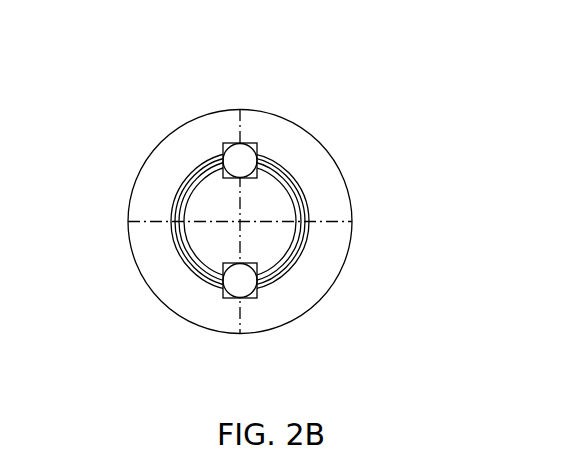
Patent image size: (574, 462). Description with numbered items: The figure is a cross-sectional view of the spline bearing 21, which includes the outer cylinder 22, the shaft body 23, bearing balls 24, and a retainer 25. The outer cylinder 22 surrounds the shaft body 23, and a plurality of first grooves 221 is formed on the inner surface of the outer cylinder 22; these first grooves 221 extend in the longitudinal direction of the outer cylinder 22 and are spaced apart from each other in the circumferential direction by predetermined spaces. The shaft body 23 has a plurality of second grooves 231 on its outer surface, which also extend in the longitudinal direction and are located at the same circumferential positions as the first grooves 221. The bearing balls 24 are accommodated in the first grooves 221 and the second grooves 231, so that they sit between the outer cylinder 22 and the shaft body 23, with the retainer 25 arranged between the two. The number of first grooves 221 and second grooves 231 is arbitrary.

The spline bearing 21 is at (104, 58).
The outer cylinder 22 is at (323, 163).
The first groove 221 is at (257, 148).
The shaft body 23 is at (267, 250).
The second groove 231 is at (296, 183).
The bearing ball 24 is at (238, 146).
The retainer 25 is at (300, 242).